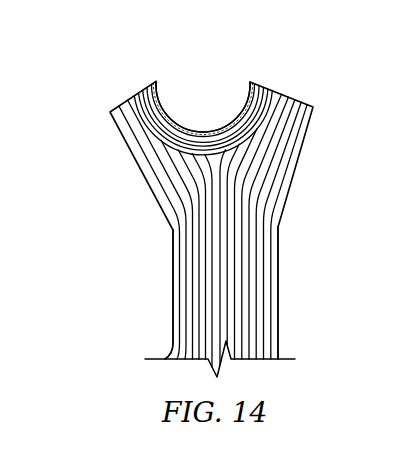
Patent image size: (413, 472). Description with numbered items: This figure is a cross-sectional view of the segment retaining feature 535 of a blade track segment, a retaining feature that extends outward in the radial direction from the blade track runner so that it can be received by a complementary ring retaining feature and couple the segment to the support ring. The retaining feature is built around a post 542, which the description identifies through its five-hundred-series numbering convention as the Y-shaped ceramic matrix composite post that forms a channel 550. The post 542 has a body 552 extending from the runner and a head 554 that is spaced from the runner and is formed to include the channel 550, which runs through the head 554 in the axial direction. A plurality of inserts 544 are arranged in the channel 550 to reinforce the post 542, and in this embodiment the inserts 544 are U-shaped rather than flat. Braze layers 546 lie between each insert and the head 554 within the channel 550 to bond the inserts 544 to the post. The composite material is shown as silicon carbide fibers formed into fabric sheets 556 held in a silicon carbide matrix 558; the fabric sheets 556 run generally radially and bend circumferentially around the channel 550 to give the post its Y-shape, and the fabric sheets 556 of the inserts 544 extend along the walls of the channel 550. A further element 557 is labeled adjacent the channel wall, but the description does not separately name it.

The channel 550 is at (234, 58).
The segment retaining feature 535 is at (122, 236).
The post 542 is at (154, 279).
The inserts 544 is at (213, 123).
The braze layers 546 is at (160, 72).
The inner ply layer 557 is at (168, 101).
The head 554 is at (147, 147).
The body 552 is at (193, 322).
The fabric sheets 556 is at (281, 147).
The matrix 558 is at (272, 203).